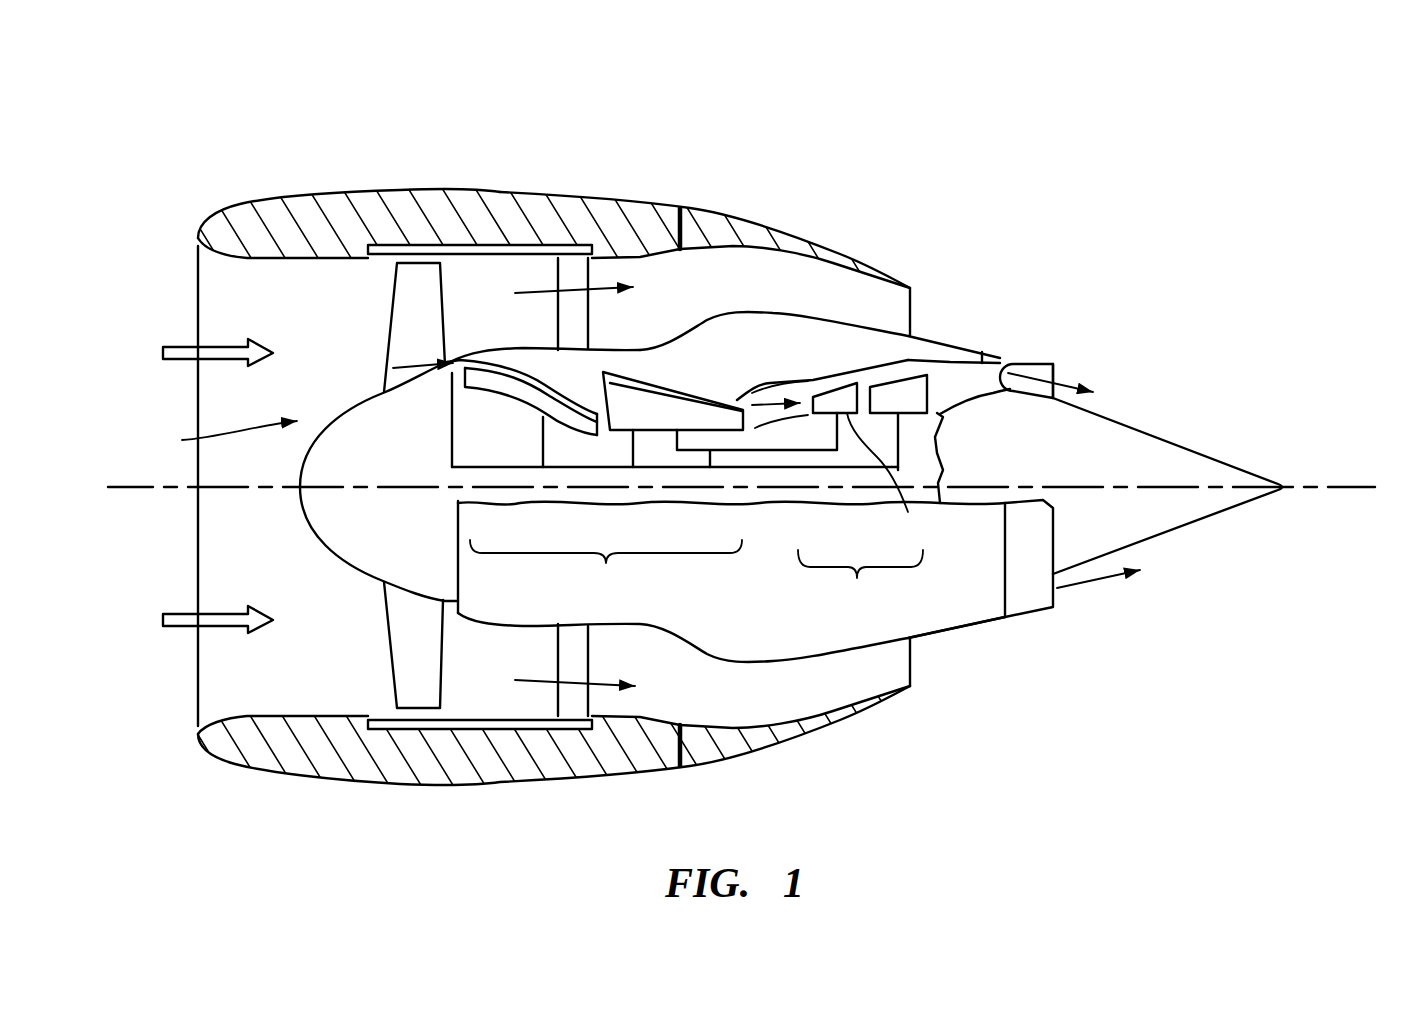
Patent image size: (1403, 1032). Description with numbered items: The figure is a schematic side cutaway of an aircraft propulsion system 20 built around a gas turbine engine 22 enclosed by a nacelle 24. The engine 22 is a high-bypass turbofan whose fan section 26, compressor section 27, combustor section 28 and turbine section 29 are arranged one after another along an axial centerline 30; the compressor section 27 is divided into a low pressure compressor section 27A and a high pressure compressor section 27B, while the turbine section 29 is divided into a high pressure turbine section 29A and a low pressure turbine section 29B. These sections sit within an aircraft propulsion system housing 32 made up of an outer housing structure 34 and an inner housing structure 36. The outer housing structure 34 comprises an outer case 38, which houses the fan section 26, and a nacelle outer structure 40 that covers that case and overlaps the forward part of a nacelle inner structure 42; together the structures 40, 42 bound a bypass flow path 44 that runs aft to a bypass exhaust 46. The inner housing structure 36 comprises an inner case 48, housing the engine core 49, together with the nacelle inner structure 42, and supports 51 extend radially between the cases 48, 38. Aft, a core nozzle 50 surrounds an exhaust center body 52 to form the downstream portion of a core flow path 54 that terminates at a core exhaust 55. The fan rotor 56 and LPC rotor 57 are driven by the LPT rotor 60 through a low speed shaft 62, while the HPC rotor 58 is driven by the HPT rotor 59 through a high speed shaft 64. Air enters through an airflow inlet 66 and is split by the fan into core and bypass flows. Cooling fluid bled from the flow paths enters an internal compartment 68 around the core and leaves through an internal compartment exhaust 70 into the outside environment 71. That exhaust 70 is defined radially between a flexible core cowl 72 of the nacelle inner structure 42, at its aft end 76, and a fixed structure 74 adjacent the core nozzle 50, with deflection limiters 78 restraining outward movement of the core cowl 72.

The aircraft propulsion system 20 is at (240, 128).
The gas turbine engine 22 is at (221, 486).
The nacelle 24 is at (473, 186).
The fan section 26 is at (367, 690).
The compressor section 27 is at (606, 572).
The low pressure compressor section 27A is at (525, 352).
The high pressure compressor section 27B is at (678, 373).
The combustor section 28 is at (788, 436).
The turbine section 29 is at (860, 585).
The high pressure turbine section 29A is at (842, 372).
The low pressure turbine section 29B is at (908, 356).
The axial centerline 30 is at (1358, 490).
The aircraft propulsion system housing 32 is at (573, 789).
The outer housing structure 34 is at (470, 790).
The inner housing structure 36 is at (820, 667).
The outer case 38 is at (397, 250).
The nacelle outer structure 40 is at (428, 188).
The nacelle inner structure 42 is at (788, 317).
The bypass flow path 44 is at (645, 336).
The bypass exhaust 46 is at (912, 672).
The inner case 48 is at (741, 403).
The core 49 is at (763, 372).
The core nozzle 50 is at (1030, 603).
The supports 51 is at (597, 273).
The exhaust center body 52 is at (1153, 542).
The core flow path 54 is at (970, 396).
The core exhaust 55 is at (1057, 373).
The fan rotor 56 is at (372, 575).
The LPC rotor 57 is at (500, 391).
The HPC rotor 58 is at (628, 460).
The HPT rotor 59 is at (887, 479).
The LPT rotor 60 is at (943, 432).
The low speed shaft 62 is at (860, 470).
The high speed shaft 64 is at (708, 452).
The airflow inlet 66 is at (197, 293).
The internal compartment 68 is at (811, 363).
The internal compartment exhaust 70 is at (1015, 360).
The environment 71 is at (1255, 293).
The core cowl 72 is at (982, 353).
The fixed structure 74 is at (1007, 388).
The aft end 76 is at (1010, 358).
The deflection limiters 78 is at (1003, 357).